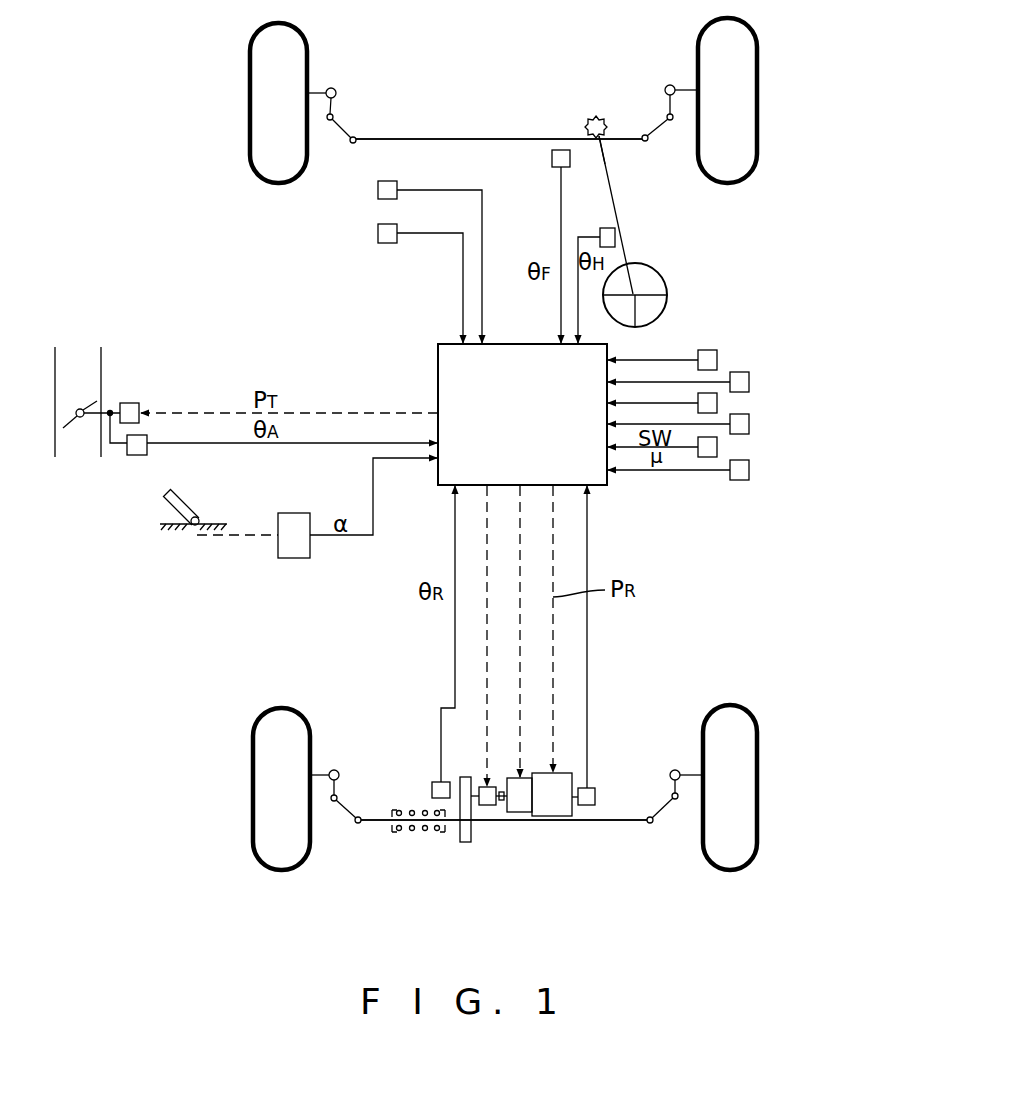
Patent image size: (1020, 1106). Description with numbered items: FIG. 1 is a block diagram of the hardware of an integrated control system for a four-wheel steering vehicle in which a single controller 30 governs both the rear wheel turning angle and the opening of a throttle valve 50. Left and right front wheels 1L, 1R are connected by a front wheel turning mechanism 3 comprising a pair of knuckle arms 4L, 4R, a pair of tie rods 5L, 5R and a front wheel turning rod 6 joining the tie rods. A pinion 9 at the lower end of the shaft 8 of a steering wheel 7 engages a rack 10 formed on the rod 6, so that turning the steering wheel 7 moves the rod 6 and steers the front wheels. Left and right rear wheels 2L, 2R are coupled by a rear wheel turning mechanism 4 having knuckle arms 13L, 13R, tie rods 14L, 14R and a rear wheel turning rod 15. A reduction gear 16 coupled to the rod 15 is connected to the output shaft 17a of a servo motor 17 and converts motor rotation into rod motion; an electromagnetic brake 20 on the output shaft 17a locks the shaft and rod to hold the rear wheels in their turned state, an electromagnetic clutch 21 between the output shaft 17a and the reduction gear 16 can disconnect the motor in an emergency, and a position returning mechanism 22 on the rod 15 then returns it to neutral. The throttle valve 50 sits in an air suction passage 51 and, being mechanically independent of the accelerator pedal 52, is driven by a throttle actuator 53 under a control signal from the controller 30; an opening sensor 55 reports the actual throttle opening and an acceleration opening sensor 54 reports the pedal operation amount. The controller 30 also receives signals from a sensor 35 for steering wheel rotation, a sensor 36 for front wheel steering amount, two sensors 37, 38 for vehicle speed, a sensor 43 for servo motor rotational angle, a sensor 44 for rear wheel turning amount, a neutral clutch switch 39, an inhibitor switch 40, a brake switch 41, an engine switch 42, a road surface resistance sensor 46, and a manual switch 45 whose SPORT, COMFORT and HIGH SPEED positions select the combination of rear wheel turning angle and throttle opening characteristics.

The left front wheel 1L is at (251, 70).
The right front wheel 1R is at (746, 98).
The left rear wheel 2L is at (254, 764).
The right rear wheel 2R is at (757, 770).
The front wheel turning mechanism 3 is at (497, 123).
The rear wheel turning mechanism 4 is at (567, 830).
The knuckle arm 4L is at (340, 109).
The knuckle arm 4R is at (668, 106).
The tie rod 5L is at (341, 129).
The tie rod 5R is at (659, 126).
The front wheel turning rod 6 is at (535, 138).
The steering wheel 7 is at (666, 286).
The shaft 8 is at (622, 221).
The pinion 9 is at (596, 115).
The rack 10 is at (603, 139).
The knuckle arm 13L is at (338, 787).
The knuckle arm 13R is at (672, 793).
The tie rod 14L is at (340, 810).
The tie rod 14R is at (660, 809).
The rear wheel turning rod 15 is at (615, 823).
The reduction gear 16 is at (460, 835).
The servo motor 17 is at (562, 773).
The output shaft 17a is at (498, 806).
The electromagnetic brake 20 is at (520, 812).
The electromagnetic clutch 21 is at (485, 786).
The position returning mechanism 22 is at (410, 843).
The controller 30 is at (438, 373).
The sensor 35 is at (604, 228).
The sensor 36 is at (552, 159).
The sensor 37 is at (378, 192).
The sensor 38 is at (378, 235).
The neutral clutch switch 39 is at (717, 353).
The inhibitor switch 40 is at (749, 375).
The brake switch 41 is at (717, 404).
The engine switch 42 is at (749, 424).
The sensor 43 is at (590, 788).
The sensor 44 is at (435, 782).
The switch 45 is at (717, 447).
The sensor 46 is at (749, 478).
The throttle valve 50 is at (63, 428).
The air suction passage 51 is at (101, 368).
The accelerator pedal 52 is at (185, 504).
The throttle actuator 53 is at (139, 405).
The acceleration opening sensor 54 is at (292, 558).
The opening sensor 55 is at (133, 455).